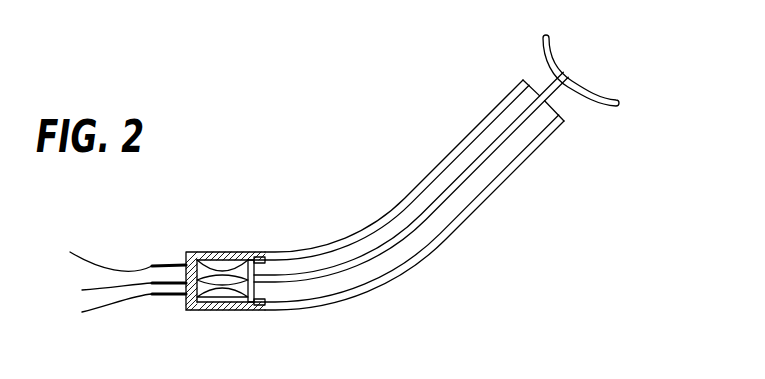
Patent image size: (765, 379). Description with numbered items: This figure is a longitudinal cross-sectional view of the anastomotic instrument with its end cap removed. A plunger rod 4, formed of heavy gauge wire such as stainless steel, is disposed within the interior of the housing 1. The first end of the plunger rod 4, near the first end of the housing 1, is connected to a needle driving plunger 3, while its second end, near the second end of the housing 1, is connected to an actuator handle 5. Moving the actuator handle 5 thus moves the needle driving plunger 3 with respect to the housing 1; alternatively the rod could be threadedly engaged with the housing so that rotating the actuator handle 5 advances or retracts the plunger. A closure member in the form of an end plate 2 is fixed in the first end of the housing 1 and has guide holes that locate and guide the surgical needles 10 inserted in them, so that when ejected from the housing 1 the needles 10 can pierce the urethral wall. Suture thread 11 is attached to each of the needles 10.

The housing 1 is at (478, 215).
The end plate 2 is at (215, 272).
The needle driving plunger 3 is at (263, 264).
The plunger rod 4 is at (522, 138).
The actuator handle 5 is at (586, 79).
The surgical needles 10 is at (158, 297).
The suture thread 11 is at (85, 253).